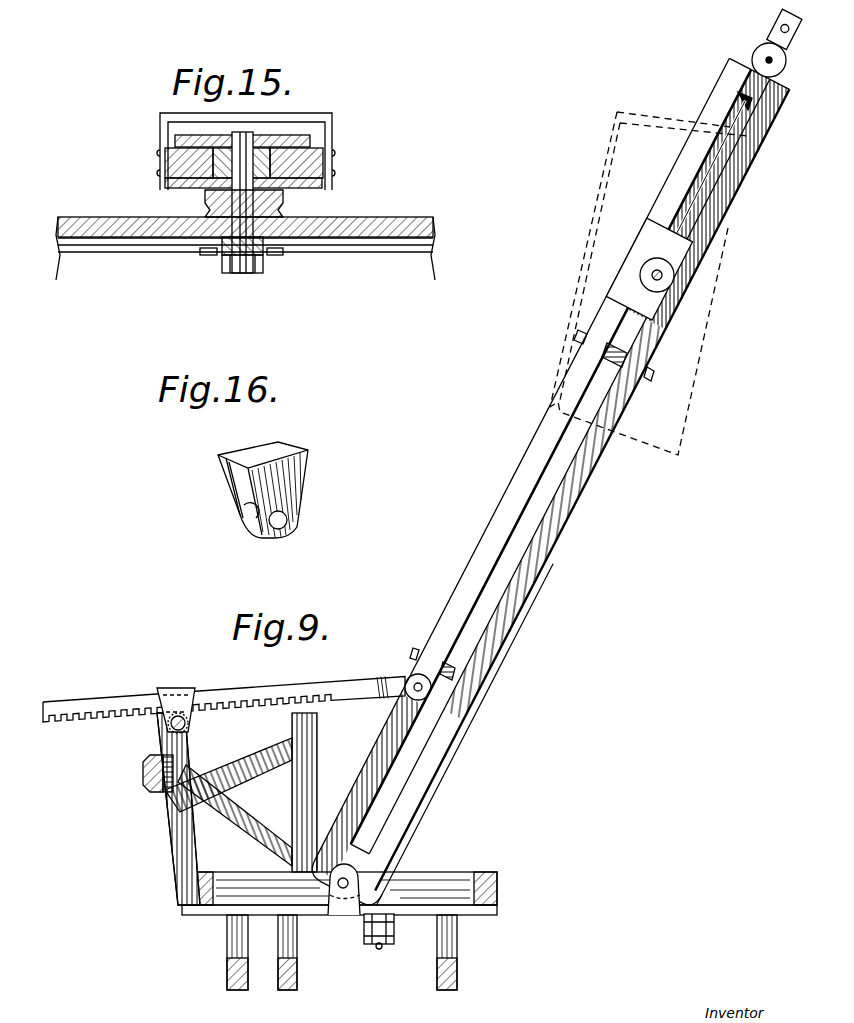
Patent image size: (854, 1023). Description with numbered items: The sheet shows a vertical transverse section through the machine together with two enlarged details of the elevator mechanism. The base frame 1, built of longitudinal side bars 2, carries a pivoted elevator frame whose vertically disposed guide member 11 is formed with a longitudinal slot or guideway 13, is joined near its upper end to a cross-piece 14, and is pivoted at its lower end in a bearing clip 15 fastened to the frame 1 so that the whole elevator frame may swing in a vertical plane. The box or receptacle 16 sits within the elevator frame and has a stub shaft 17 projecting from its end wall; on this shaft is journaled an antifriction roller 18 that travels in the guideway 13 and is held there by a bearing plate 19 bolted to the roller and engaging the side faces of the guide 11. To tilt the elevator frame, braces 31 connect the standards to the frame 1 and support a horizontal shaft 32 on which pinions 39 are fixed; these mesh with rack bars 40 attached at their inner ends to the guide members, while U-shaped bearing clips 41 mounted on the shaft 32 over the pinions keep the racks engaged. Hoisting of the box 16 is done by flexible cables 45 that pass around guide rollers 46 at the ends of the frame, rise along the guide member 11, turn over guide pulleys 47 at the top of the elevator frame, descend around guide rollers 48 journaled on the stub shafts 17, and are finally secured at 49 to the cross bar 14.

In FIG. 9, the base frame 1 is at (472, 868).
In FIG. 9, the longitudinal side bars 2 is at (192, 886).
In FIG. 15, the guide member 11 is at (330, 172).
In FIG. 9, the guide member 11 is at (537, 458).
In FIG. 9, the longitudinal slots or guideways 13 is at (548, 490).
In FIG. 9, the cross-piece 14 is at (773, 80).
In FIG. 9, the bearing members or clips 15 is at (352, 915).
In FIG. 15, the box or receptacle 16 is at (410, 218).
In FIG. 9, the box or receptacle 16 is at (603, 208).
In FIG. 15, the stub shafts 17 is at (240, 240).
In FIG. 9, the stub shafts 17 is at (656, 332).
In FIG. 15, the antifriction guide members or rollers 18 is at (278, 152).
In FIG. 15, the bearing members or plates 19 is at (178, 137).
In FIG. 9, the bearing members or plates 19 is at (622, 290).
In FIG. 9, the braces 31 is at (143, 782).
In FIG. 9, the horizontal shaft 32 is at (163, 731).
In FIG. 9, the pinions 39 is at (190, 726).
In FIG. 9, the rack bars 40 is at (103, 690).
In FIG. 16, the U-shaped bearing members or clips 41 is at (290, 483).
In FIG. 9, the U-shaped bearing members or clips 41 is at (195, 669).
In FIG. 9, the flexible hoisting elements or cables 45 is at (532, 600).
In FIG. 9, the guide rollers 46 is at (378, 948).
In FIG. 9, the guide pulleys 47 is at (765, 47).
In FIG. 15, the guide rollers 48 is at (273, 223).
In FIG. 9, the guide rollers 48 is at (662, 275).
In FIG. 9, the securing point of hoisting cables 49 is at (745, 100).